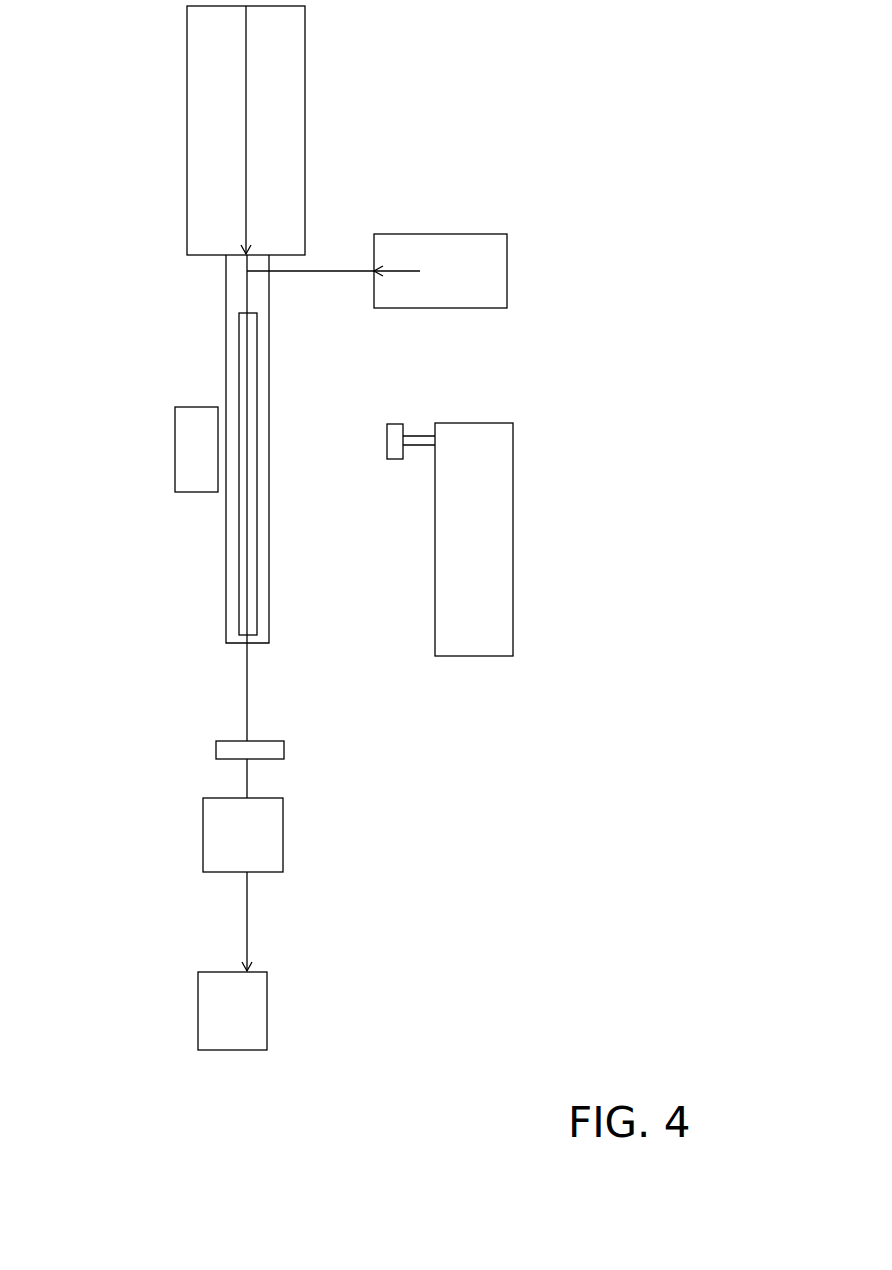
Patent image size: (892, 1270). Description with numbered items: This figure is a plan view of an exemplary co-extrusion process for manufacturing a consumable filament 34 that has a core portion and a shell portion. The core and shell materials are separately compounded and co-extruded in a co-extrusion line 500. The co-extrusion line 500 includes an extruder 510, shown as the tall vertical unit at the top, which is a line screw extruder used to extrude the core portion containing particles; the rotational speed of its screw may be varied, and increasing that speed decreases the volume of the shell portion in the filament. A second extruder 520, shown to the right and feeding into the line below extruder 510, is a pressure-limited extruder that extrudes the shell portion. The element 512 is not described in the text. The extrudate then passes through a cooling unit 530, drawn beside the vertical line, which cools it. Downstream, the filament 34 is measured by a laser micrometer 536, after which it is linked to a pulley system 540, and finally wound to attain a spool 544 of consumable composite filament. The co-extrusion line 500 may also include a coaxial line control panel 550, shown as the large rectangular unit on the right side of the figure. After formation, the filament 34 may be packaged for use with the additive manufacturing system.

The extruder 510 is at (316, 62).
The light beam 512 is at (234, 151).
The co-extrusion line 500 is at (196, 600).
The extruder 520 is at (421, 221).
The cooling unit 530 is at (170, 447).
The coaxial line control panel 550 is at (526, 565).
The filament 34 is at (240, 680).
The laser micrometer 536 is at (212, 748).
The pulley system 540 is at (200, 830).
The spool 544 is at (196, 1004).